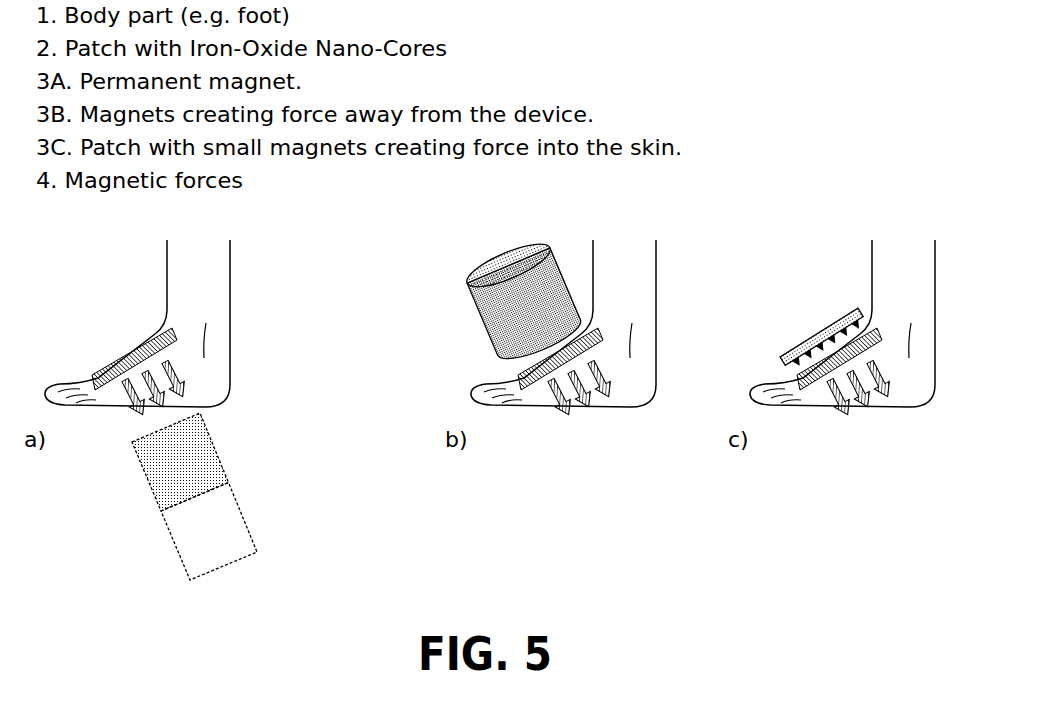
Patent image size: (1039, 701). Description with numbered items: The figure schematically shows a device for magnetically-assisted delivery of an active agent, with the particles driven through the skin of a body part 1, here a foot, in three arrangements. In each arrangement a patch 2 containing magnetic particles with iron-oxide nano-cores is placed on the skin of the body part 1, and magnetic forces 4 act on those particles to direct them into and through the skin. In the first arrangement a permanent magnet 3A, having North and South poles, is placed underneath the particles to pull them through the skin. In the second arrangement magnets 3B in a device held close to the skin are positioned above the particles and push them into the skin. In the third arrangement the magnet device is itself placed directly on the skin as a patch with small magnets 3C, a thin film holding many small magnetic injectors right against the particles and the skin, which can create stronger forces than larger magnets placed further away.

The body part 1 is at (208, 268).
The patch 2 is at (117, 360).
The permanent magnet 3A is at (165, 531).
The magnets 3B is at (509, 252).
The patch with small magnets 3C is at (815, 322).
The magnetic forces 4 is at (175, 384).